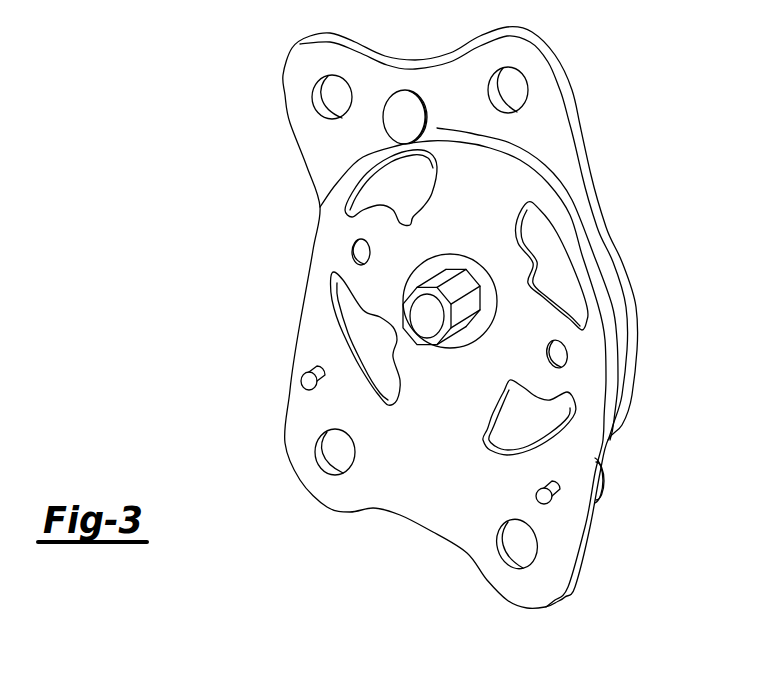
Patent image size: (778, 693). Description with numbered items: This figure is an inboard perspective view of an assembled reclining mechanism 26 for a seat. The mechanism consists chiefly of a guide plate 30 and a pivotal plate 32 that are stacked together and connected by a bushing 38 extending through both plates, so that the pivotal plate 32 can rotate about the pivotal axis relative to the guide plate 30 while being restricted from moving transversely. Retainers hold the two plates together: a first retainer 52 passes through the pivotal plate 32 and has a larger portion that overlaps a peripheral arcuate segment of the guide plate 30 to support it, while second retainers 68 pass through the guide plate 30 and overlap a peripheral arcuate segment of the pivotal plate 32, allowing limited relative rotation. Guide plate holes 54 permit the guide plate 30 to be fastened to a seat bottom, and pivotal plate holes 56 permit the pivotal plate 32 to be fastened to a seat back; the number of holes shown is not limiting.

The pump assembly 26 is at (680, 178).
The guide plate 30 is at (325, 263).
The pivotal plate 32 is at (424, 75).
The bushing 38 is at (430, 284).
The first retainer 52 is at (398, 119).
The guide plate holes 54 is at (520, 537).
The pivotal plate holes 56 is at (327, 97).
The second retainer 68 is at (320, 368).